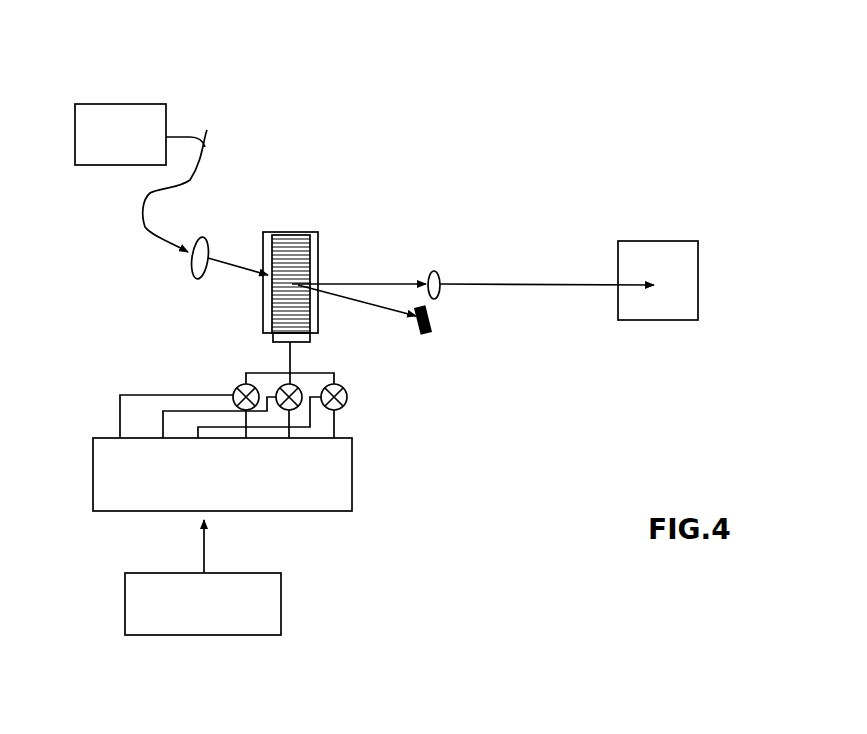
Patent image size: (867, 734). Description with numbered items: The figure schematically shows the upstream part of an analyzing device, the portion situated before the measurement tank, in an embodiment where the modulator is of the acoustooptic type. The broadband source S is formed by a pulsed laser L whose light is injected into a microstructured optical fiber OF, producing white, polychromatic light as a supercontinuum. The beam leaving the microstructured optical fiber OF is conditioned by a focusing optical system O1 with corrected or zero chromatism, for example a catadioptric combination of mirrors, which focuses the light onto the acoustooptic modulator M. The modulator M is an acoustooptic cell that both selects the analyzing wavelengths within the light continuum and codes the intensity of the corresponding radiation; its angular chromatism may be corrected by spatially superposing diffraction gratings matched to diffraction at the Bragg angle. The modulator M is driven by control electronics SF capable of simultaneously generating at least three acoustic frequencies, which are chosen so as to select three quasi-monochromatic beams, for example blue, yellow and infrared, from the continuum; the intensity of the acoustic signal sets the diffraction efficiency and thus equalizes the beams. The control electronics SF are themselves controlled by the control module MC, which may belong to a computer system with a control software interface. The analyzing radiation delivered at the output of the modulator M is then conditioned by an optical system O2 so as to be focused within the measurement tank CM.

The pulsed laser L is at (130, 104).
The source S is at (196, 86).
The microstructured optical fiber OF is at (206, 135).
The focusing optical system O1 is at (195, 272).
The acoustooptic modulator M is at (283, 238).
The optical system O2 is at (437, 266).
The measurement tank CM is at (680, 241).
The control electronics SF is at (352, 477).
The control module MC is at (281, 613).